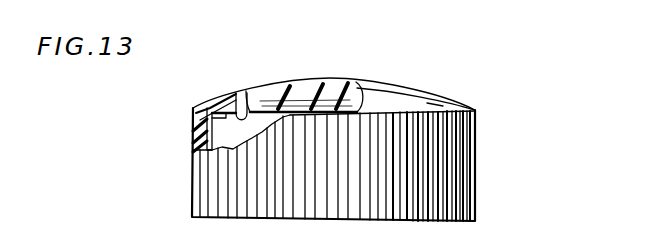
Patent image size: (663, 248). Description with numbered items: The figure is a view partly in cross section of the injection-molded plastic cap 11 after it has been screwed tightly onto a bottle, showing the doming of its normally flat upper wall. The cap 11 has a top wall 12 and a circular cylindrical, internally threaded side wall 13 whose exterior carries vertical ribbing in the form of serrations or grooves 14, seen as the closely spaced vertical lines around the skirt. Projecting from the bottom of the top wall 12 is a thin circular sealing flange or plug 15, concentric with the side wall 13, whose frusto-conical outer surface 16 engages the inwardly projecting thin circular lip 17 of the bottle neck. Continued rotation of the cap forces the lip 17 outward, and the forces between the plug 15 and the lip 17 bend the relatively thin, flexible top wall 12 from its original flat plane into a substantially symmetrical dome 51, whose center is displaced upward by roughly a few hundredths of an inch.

The cap 11 is at (503, 114).
The top wall 12 is at (270, 93).
The side wall 13 is at (198, 146).
The serrations or grooves 14 is at (200, 168).
The sealing flange or plug 15 is at (235, 96).
The frusto-conical outer surface 16 is at (244, 94).
The lip 17 is at (197, 113).
The dome 51 is at (395, 84).